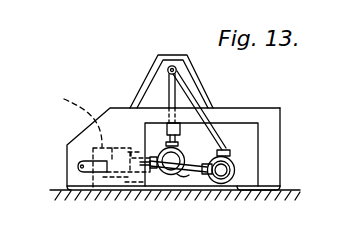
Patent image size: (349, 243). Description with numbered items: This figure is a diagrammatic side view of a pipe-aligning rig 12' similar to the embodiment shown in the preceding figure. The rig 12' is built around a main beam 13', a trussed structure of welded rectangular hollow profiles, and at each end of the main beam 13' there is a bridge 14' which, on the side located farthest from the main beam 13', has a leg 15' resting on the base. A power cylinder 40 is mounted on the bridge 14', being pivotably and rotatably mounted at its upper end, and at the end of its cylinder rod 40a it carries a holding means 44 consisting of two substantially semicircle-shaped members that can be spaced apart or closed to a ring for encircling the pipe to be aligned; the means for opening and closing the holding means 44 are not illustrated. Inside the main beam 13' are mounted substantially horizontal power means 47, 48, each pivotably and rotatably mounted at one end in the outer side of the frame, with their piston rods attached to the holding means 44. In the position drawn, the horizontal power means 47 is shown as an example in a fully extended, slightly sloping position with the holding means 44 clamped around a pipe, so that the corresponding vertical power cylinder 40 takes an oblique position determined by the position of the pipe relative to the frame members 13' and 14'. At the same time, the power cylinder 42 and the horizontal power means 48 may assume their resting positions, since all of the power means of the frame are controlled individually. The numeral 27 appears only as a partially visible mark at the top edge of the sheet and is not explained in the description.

The rig 12' is at (160, 164).
The main beam 13' is at (71, 117).
The bridge 14' is at (218, 128).
The leg 15' is at (288, 147).
The partially visible element 27 is at (145, 5).
The power cylinder 40 is at (184, 87).
The cylinder rod 40a is at (213, 140).
The power cylinder 42 is at (166, 88).
The holding means 44 is at (248, 187).
The horizontal power means 47 is at (118, 172).
The horizontal power means 48 is at (114, 148).